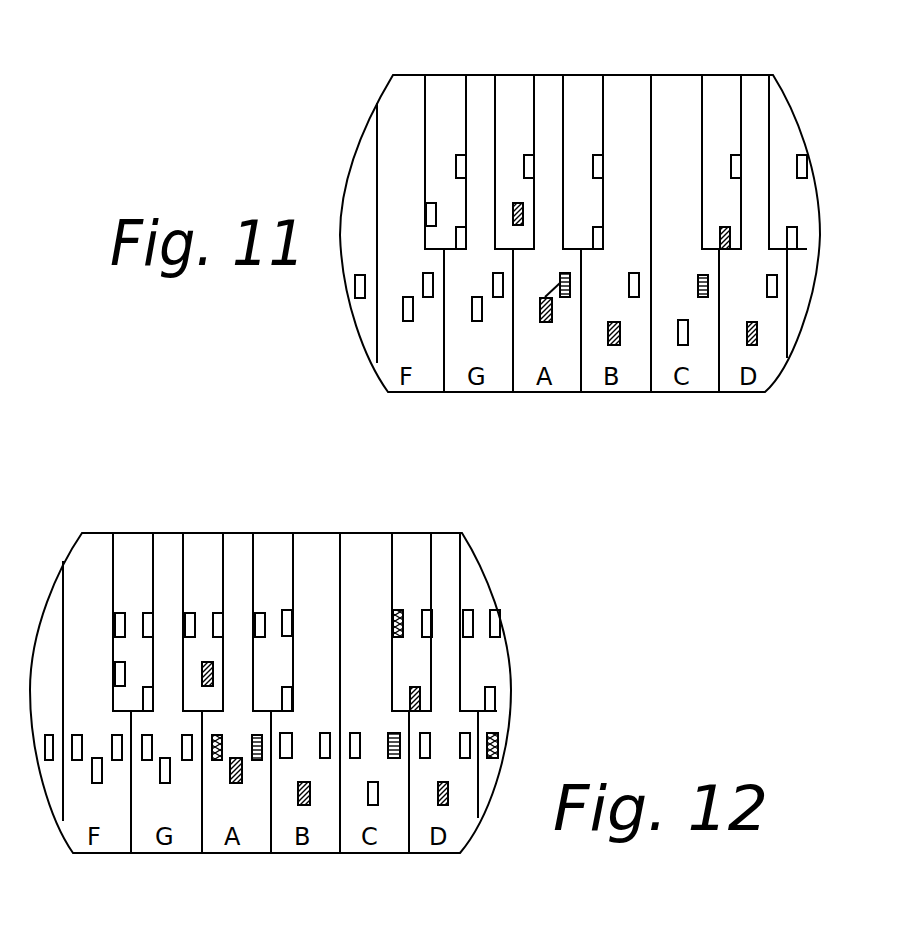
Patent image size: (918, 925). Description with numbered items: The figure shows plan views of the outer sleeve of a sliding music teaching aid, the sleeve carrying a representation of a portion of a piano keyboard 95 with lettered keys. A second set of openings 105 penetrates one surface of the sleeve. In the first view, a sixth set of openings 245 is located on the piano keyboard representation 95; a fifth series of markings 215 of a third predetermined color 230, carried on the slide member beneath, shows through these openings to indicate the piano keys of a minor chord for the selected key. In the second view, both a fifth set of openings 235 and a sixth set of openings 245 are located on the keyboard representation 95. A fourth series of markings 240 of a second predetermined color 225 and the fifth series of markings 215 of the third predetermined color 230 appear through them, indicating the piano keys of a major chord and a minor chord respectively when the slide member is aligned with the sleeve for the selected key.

In FIG. 11, the representation of a portion of a piano keyboard 95 is at (665, 75).
In FIG. 12, the representation of a portion of a piano keyboard 95 is at (237, 533).
In FIG. 11, the second set of openings 105 is at (272, 25).
In FIG. 11, the fifth series of markings 215 is at (708, 280).
In FIG. 12, the fifth series of markings 215 is at (400, 740).
In FIG. 12, the second predetermined color 225 is at (403, 620).
In FIG. 11, the third predetermined color 230 is at (700, 280).
In FIG. 12, the third predetermined color 230 is at (403, 742).
In FIG. 12, the fifth set of openings 235 is at (215, 735).
In FIG. 12, the fourth series of markings 240 is at (398, 610).
In FIG. 11, the sixth set of openings 245 is at (543, 322).
In FIG. 12, the sixth set of openings 245 is at (390, 742).